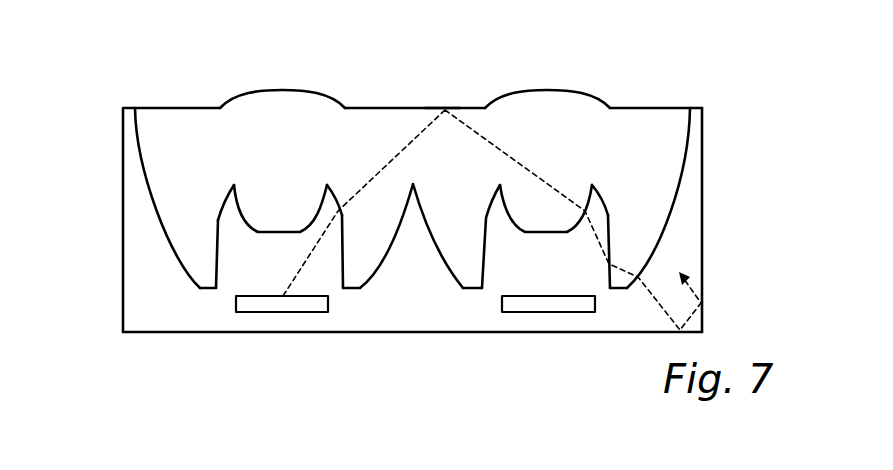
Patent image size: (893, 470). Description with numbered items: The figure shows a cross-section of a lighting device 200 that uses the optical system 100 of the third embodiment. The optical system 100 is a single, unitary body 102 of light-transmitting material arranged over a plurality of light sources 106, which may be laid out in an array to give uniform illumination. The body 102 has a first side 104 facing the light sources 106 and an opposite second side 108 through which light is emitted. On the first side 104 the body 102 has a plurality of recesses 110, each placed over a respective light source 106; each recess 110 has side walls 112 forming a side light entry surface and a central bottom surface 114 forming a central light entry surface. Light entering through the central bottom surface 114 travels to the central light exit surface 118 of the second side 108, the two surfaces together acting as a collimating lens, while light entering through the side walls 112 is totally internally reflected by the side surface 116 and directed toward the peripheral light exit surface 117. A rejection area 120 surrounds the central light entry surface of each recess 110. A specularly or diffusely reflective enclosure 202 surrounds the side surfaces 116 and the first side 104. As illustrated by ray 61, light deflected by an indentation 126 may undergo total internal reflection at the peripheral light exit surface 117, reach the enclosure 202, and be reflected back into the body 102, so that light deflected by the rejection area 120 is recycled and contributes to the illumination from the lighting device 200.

The optical system 100 is at (126, 69).
The lighting device 200 is at (694, 67).
The reflective enclosure 202 is at (703, 220).
The body 102 is at (148, 148).
The first side 104 is at (210, 290).
The light source 106 is at (273, 306).
The second side 108 is at (380, 107).
The recess 110 is at (291, 236).
The side walls 112 is at (216, 266).
The central bottom surface 114 is at (340, 268).
The side surface 116 is at (150, 200).
The peripheral light exit surface 117 is at (437, 108).
The central light exit surface 118 is at (312, 92).
The rejection area 120 is at (204, 211).
The indentation 126 is at (219, 213).
The ray 61 is at (477, 128).